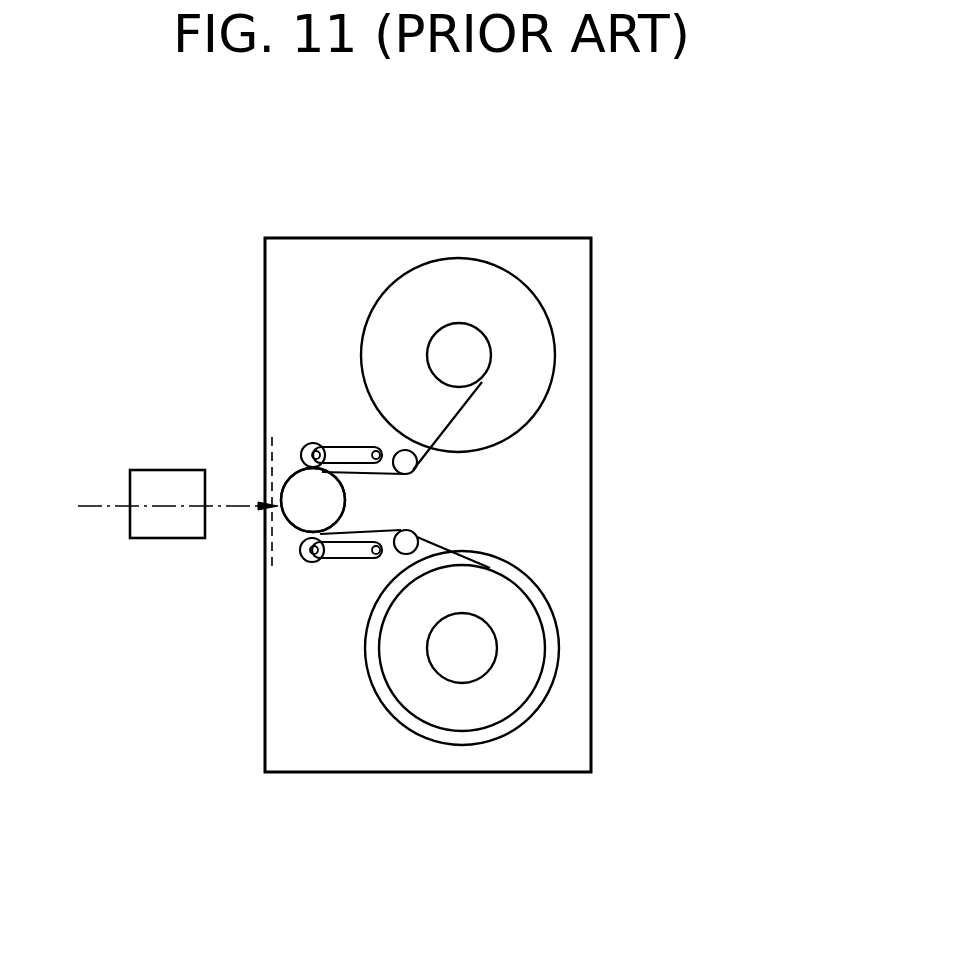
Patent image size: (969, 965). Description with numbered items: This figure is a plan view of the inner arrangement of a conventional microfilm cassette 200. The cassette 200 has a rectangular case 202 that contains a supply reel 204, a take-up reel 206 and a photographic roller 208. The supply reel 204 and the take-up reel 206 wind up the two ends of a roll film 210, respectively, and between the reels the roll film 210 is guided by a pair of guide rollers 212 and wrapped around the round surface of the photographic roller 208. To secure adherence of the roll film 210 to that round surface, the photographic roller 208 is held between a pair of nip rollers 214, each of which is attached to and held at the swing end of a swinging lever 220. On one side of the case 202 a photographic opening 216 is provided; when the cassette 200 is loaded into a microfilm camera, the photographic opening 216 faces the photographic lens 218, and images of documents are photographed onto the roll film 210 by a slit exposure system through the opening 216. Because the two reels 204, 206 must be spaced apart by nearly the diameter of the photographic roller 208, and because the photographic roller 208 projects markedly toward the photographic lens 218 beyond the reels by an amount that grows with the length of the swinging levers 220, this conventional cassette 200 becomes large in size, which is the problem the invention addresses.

The microfilm cassette 200 is at (603, 238).
The rectangular case 202 is at (372, 238).
The supply reel 204 is at (550, 325).
The take-up reel 206 is at (557, 675).
The photographic roller 208 is at (297, 512).
The roll film 210 is at (467, 403).
The guide rollers 212 is at (417, 466).
The nip rollers 214 is at (303, 447).
The photographic opening 216 is at (282, 492).
The photographic lens 218 is at (157, 469).
The swinging levers 220 is at (345, 446).